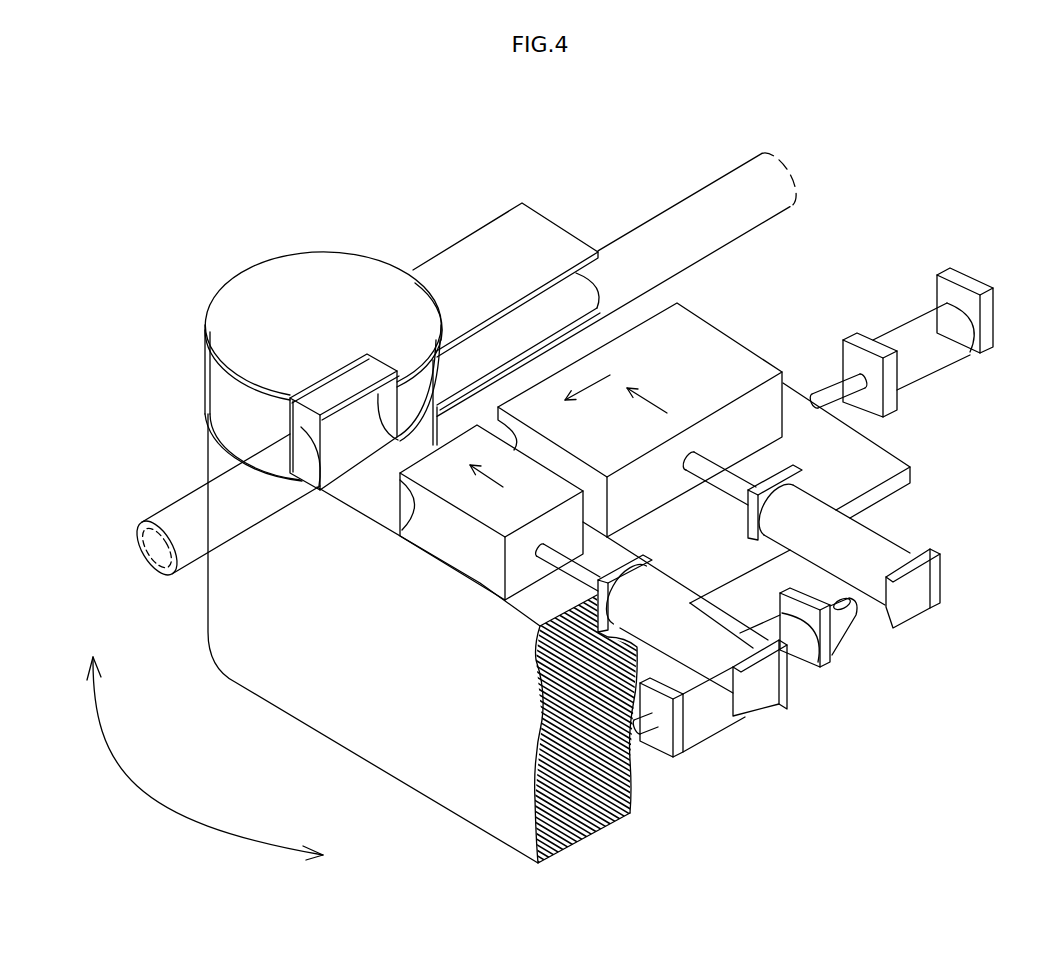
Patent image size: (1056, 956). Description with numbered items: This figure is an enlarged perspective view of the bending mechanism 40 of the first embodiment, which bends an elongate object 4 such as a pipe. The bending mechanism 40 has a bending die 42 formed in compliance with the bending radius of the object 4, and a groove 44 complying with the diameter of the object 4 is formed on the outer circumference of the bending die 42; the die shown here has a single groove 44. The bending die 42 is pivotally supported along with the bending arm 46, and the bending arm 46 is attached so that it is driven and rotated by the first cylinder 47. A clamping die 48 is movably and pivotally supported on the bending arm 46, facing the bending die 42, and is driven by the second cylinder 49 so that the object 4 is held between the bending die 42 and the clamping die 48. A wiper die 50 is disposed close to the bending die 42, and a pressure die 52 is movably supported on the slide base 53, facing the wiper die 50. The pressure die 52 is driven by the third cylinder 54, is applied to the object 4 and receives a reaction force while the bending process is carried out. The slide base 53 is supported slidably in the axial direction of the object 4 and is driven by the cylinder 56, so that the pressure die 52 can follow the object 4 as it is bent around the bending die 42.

The elongate object 4 is at (700, 210).
The bending mechanism 40 is at (386, 243).
The bending die 42 is at (232, 335).
The groove 44 is at (317, 487).
The bending arm 46 is at (250, 611).
The first cylinder 47 is at (803, 640).
The clamping die 48 is at (463, 527).
The second cylinder 49 is at (705, 650).
The wiper die 50 is at (487, 247).
The pressure die 52 is at (712, 343).
The slide base 53 is at (873, 460).
The third cylinder 54 is at (863, 540).
The cylinder 56 is at (910, 328).